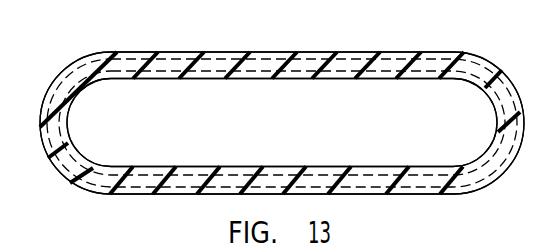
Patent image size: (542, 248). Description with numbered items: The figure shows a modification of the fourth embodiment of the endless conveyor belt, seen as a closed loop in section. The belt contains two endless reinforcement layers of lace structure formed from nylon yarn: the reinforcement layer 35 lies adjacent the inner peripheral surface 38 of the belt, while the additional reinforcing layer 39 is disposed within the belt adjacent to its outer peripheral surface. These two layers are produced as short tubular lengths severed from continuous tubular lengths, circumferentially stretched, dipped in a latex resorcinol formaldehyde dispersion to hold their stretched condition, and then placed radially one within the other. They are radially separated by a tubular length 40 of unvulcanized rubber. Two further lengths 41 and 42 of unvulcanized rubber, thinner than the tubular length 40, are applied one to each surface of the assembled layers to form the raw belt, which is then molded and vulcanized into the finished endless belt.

The reinforcement layer 35 is at (80, 90).
The inner peripheral surface 38 is at (283, 78).
The additional reinforcing layer 39 is at (63, 68).
The tubular length of unvulcanized rubber 40 is at (92, 66).
The length of unvulcanized rubber 41 is at (178, 54).
The length of unvulcanized rubber 42 is at (249, 71).